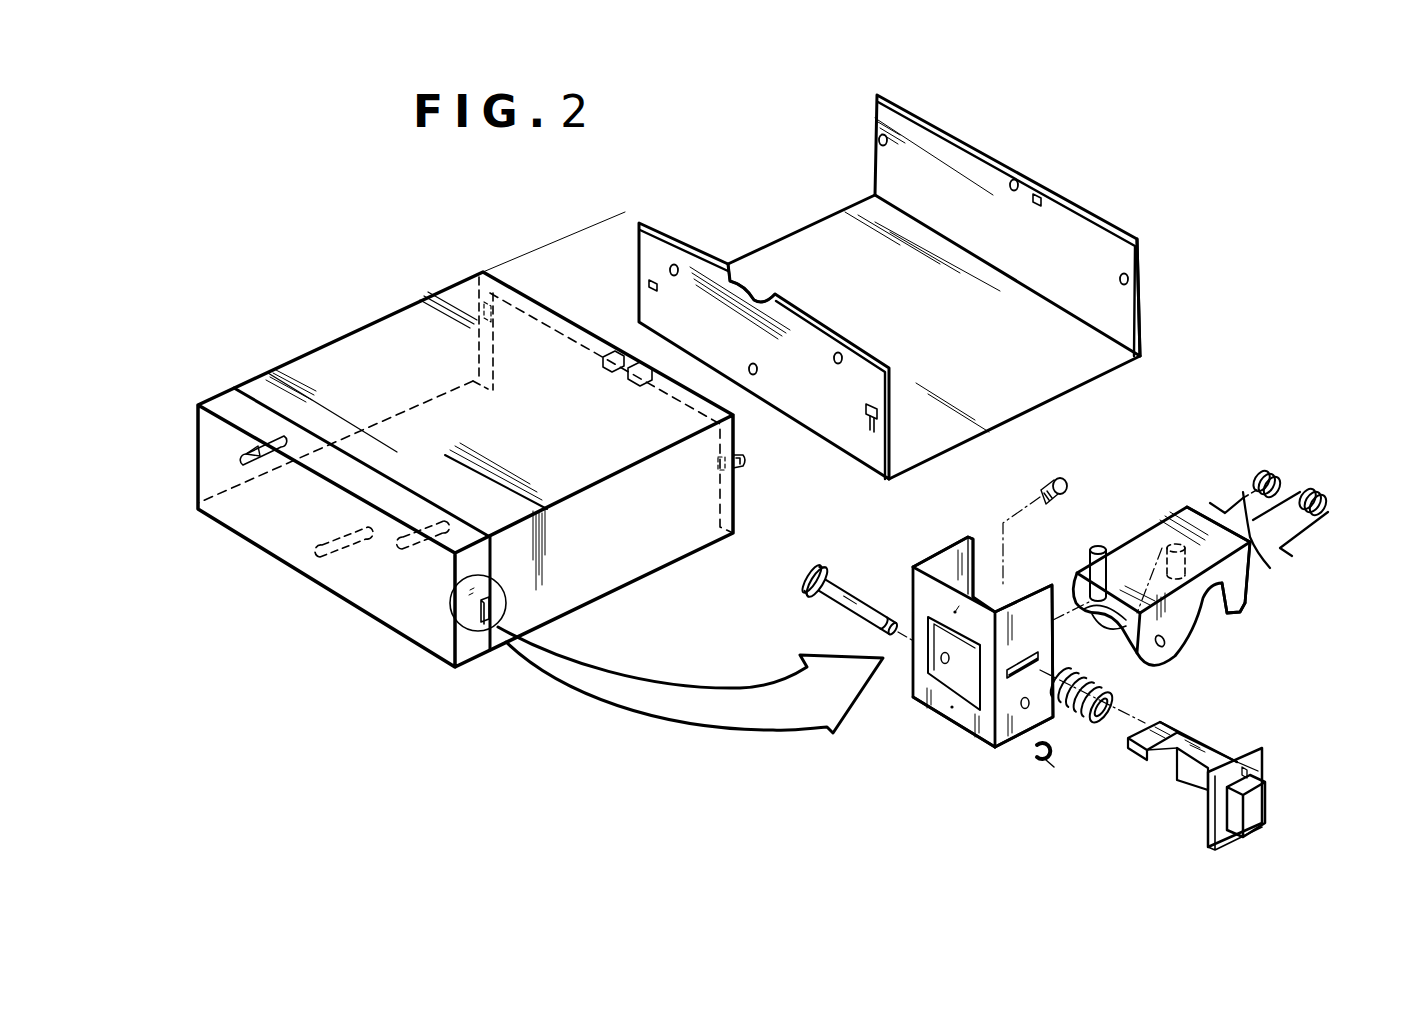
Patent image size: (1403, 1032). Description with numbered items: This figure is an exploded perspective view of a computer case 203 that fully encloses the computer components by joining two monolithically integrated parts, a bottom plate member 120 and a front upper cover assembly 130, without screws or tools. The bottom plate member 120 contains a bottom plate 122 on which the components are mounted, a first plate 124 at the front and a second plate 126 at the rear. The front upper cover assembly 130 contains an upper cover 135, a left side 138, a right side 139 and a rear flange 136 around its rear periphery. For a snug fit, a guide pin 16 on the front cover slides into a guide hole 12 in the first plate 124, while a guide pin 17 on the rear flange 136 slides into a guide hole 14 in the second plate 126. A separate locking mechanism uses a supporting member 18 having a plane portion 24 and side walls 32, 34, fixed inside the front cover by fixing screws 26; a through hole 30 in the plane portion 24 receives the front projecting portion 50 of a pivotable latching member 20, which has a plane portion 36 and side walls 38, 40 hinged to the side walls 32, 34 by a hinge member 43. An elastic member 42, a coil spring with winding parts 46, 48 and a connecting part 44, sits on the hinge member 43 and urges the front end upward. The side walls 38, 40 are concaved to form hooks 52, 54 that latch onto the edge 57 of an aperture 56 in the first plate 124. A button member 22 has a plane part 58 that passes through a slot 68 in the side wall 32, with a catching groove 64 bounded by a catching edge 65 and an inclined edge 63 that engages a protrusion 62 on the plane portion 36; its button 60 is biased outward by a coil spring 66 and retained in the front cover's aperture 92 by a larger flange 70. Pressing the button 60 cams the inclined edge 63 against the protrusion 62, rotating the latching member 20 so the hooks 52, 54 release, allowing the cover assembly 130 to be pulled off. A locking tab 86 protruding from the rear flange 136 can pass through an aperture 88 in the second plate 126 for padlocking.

The guide hole 12 is at (666, 268).
The guide hole 14 is at (874, 130).
The guide pin 16 is at (277, 438).
The guide pin 17 is at (503, 313).
The supporting member 18 is at (937, 717).
The pivotable latching member 20 is at (1185, 503).
The button member 22 is at (1249, 740).
The plane portion 24 is at (973, 735).
The fixing screw 26 is at (1055, 479).
The through hole 30 is at (955, 618).
The side wall 32 is at (1052, 585).
The side wall 34 is at (961, 535).
The plane portion 36 is at (1200, 502).
The side wall 38 is at (1173, 628).
The side wall 40 is at (1122, 627).
The elastic member 42 is at (1314, 470).
The hinge member 43 is at (843, 603).
The connecting part 44 is at (1270, 568).
The winding part 46 is at (1324, 492).
The winding part 48 is at (1268, 478).
The front projecting portion 50 is at (1087, 605).
The hook 52 is at (1235, 603).
The hook 54 is at (1172, 540).
The aperture 56 is at (866, 413).
The edge 57 is at (871, 432).
The plane part 58 is at (1188, 803).
The button 60 is at (1257, 812).
The protrusion 62 is at (1107, 547).
The inclined edge 63 is at (1178, 792).
The catching groove 64 is at (1163, 757).
The catching edge 65 is at (1150, 760).
The coil spring 66 is at (1090, 737).
The slot 68 is at (1008, 742).
The flange 70 is at (1267, 757).
The locking tab 86 is at (628, 350).
The aperture 88 is at (1037, 194).
The aperture 92 is at (482, 624).
The bottom plate member 120 is at (1157, 285).
The bottom plate 122 is at (818, 235).
The first plate 124 is at (730, 270).
The second plate 126 is at (1045, 222).
The front upper cover assembly 130 is at (291, 586).
The upper cover 135 is at (385, 304).
The rear flange 136 is at (557, 312).
The left side 138 is at (310, 362).
The right side 139 is at (600, 588).
The computer case 203 is at (1291, 123).